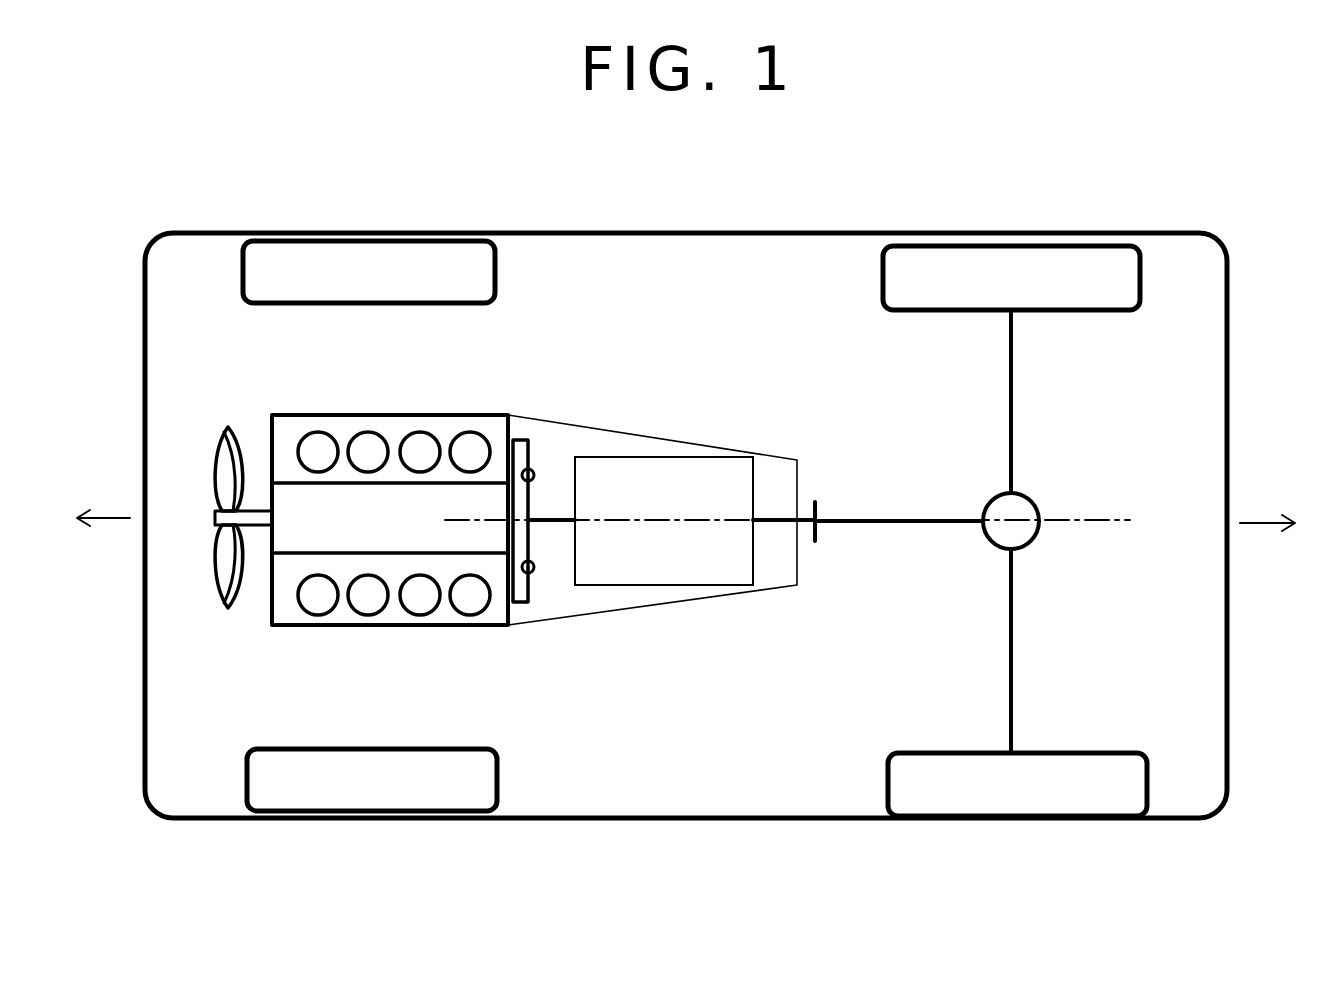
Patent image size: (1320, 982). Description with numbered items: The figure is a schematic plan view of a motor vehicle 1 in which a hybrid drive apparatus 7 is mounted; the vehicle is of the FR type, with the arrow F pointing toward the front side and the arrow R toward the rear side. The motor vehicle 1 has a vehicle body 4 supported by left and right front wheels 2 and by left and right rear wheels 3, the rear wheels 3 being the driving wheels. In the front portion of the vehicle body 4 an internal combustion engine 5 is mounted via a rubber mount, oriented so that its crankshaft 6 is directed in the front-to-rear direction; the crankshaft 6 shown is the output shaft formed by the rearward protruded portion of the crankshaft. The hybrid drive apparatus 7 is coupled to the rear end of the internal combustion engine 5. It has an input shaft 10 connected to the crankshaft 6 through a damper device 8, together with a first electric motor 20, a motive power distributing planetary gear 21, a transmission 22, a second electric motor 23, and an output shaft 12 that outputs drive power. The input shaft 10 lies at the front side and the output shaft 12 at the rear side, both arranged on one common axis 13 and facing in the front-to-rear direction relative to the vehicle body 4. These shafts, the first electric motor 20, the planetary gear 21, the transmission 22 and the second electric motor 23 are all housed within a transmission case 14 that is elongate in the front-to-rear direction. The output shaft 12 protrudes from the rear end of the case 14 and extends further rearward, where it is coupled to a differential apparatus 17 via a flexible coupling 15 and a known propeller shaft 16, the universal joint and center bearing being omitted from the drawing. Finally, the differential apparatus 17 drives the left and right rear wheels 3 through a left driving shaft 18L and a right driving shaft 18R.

The motor vehicle 1 is at (424, 213).
The front wheels 2 is at (301, 262).
The rear wheels 3 is at (1040, 262).
The vehicle body 4 is at (666, 229).
The internal combustion engine 5 is at (383, 412).
The crankshaft 6 is at (502, 508).
The hybrid drive apparatus 7 is at (560, 416).
The damper device 8 is at (518, 440).
The input shaft 10 is at (553, 525).
The output shaft 12 is at (776, 528).
The axis 13 is at (1057, 531).
The transmission case 14 is at (714, 433).
The flexible coupling 15 is at (822, 497).
The propeller shaft 16 is at (895, 519).
The differential apparatus 17 is at (1042, 497).
The right driving shaft 18R is at (1014, 381).
The left driving shaft 18L is at (1016, 656).
The first electric motor 20 is at (648, 453).
The motive power distributing planetary gear 21 is at (664, 521).
The transmission 22 is at (664, 521).
The second electric motor 23 is at (664, 521).